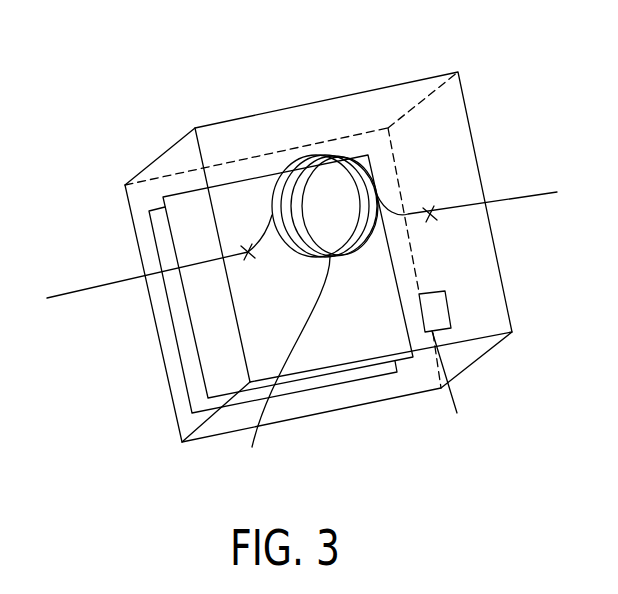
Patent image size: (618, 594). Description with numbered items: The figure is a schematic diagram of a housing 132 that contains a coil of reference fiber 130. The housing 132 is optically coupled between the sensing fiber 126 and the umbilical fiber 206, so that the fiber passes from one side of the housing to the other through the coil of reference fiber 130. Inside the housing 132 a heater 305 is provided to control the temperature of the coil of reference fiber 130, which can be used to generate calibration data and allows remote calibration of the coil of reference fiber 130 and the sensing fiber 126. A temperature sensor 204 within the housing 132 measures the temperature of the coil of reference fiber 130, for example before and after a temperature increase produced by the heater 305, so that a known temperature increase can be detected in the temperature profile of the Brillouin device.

The housing 132 is at (312, 100).
The sensing fiber 126 is at (525, 198).
The umbilical fiber 206 is at (93, 287).
The heater 305 is at (168, 352).
The coil of reference fiber 130 is at (283, 372).
The temperature sensor 204 is at (434, 333).